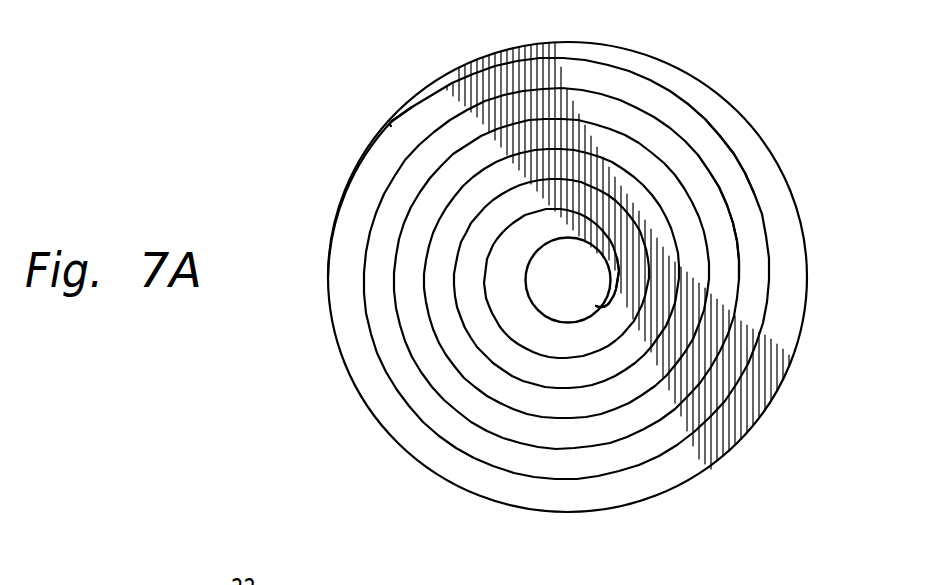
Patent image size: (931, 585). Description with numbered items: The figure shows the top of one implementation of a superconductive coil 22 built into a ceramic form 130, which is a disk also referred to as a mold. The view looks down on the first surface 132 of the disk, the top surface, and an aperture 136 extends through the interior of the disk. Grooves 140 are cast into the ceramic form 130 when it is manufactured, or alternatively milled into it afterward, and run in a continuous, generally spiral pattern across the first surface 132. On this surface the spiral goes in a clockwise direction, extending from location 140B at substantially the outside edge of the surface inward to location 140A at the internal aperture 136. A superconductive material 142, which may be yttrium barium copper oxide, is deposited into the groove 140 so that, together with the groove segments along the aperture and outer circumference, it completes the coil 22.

The coil 22 is at (306, 405).
The ceramic form 130 is at (735, 113).
The first surface 132 is at (728, 170).
The aperture 136 is at (568, 238).
The grooves 140 is at (763, 200).
The location at internal aperture 140A is at (597, 310).
The location at outside edge 140B is at (391, 122).
The superconductive material 142 is at (743, 253).